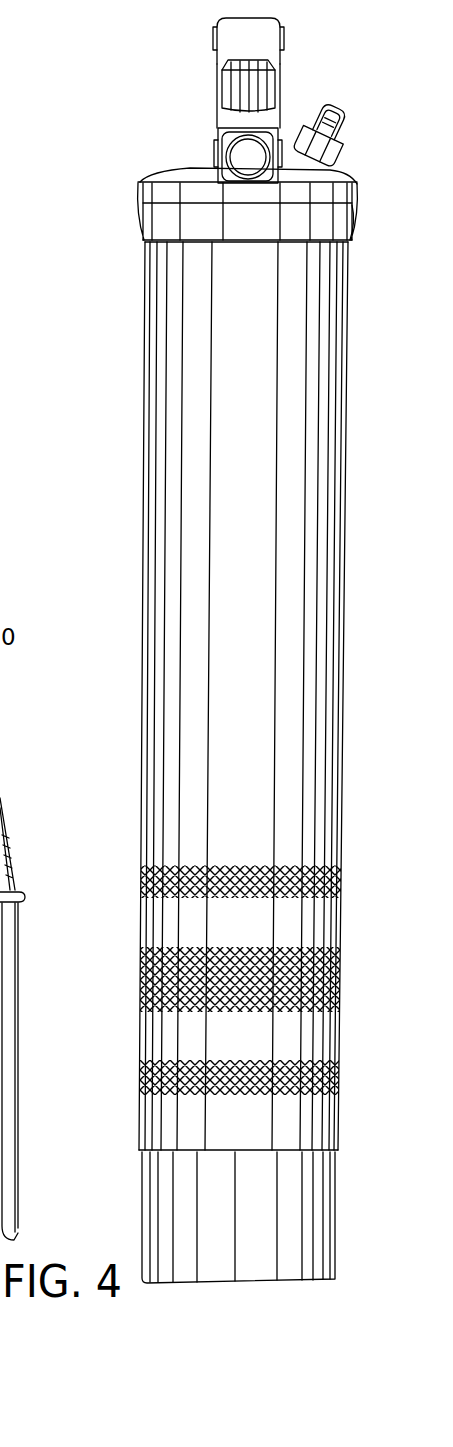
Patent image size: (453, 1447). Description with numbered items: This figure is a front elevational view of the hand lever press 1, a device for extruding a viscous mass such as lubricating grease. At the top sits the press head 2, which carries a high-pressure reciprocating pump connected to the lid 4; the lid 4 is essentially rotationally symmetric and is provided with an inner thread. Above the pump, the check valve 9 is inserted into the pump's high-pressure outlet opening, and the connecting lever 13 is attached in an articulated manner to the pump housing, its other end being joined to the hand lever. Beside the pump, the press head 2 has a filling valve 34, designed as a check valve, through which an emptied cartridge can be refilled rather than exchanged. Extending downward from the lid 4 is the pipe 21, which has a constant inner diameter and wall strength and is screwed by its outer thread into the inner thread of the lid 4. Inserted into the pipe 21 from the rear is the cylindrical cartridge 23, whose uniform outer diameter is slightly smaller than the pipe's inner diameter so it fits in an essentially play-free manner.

The hand lever press 1 is at (115, 24).
The press head 2 is at (136, 162).
The lid 4 is at (353, 216).
The check valve 9 is at (262, 82).
The connecting lever 13 is at (270, 30).
The pipe 21 is at (333, 743).
The cylindrical cartridge 23 is at (322, 1208).
The filling valve 34 is at (350, 146).